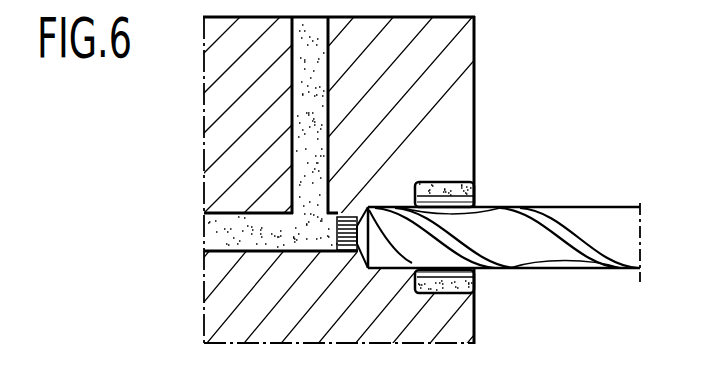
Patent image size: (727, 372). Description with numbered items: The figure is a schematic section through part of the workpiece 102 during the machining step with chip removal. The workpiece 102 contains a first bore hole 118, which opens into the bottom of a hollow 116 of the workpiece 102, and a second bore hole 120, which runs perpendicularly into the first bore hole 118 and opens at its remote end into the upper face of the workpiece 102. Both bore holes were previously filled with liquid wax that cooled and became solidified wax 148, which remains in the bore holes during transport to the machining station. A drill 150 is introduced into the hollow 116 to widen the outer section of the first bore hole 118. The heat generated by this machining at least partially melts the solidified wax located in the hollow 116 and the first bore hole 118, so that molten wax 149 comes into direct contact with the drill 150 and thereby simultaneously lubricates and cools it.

The workpiece 102 is at (462, 92).
The hollow 116 is at (476, 290).
The first bore hole 118 is at (243, 242).
The second bore hole 120 is at (307, 78).
The solidified wax 148 is at (310, 108).
The molten wax 149 is at (472, 201).
The drill 150 is at (620, 228).